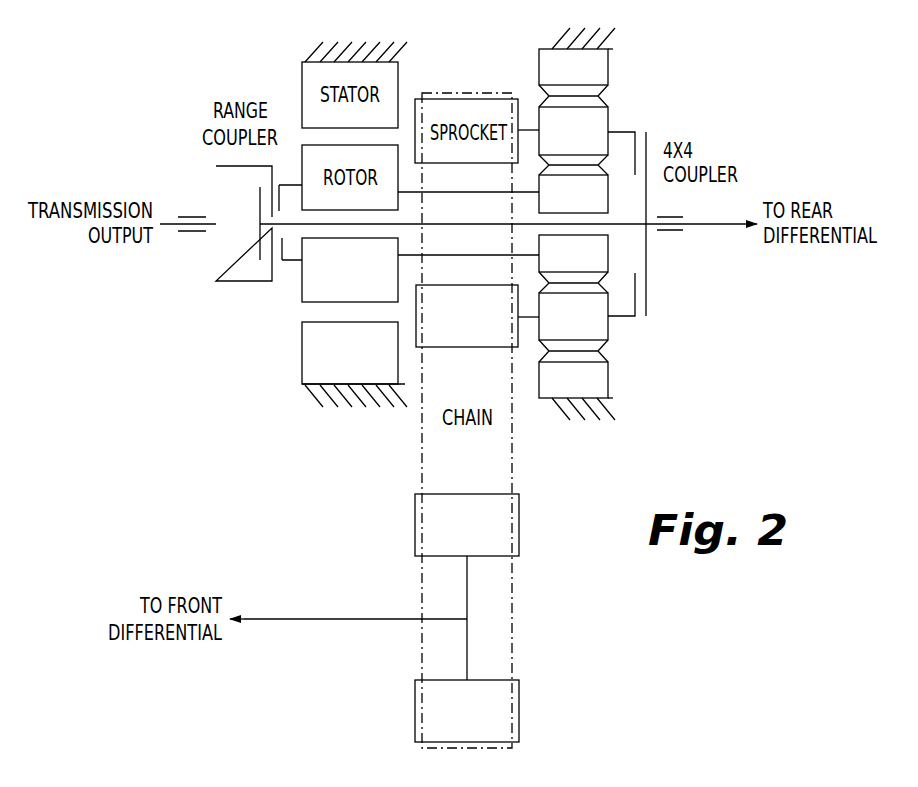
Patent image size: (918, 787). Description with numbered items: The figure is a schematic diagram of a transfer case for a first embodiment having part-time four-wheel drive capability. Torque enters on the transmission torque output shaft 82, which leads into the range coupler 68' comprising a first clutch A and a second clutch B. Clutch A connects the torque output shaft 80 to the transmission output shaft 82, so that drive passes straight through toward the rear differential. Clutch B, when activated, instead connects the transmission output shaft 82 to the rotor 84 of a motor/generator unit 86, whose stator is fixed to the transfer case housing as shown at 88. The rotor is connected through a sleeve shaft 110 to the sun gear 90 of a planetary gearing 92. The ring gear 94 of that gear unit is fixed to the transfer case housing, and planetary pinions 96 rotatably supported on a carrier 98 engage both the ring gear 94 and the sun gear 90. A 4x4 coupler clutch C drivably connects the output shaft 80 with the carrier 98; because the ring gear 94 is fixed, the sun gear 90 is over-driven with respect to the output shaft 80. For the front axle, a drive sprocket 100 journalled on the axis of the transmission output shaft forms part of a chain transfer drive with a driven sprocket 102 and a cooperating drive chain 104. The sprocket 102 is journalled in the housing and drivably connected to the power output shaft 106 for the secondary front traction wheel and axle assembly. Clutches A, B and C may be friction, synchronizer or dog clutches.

The range coupler 68' is at (237, 259).
The torque output shaft 80 is at (484, 224).
The transmission torque output shaft 82 is at (172, 233).
The rotor 84 is at (328, 292).
The motor/generator unit 86 is at (300, 80).
The stator fixed to transfer case housing 88 is at (398, 72).
The sun gear 90 is at (606, 186).
The planetary gearing 92 is at (608, 382).
The ring gear 94 is at (608, 73).
The planetary pinions 96 is at (606, 329).
The carrier 98 is at (532, 128).
The drive sprocket 100 is at (445, 107).
The driven sprocket 102 is at (415, 516).
The drive chain 104 is at (516, 479).
The power output shaft 106 is at (325, 617).
The sleeve shaft 110 is at (484, 192).
The first clutch A is at (265, 264).
The second clutch B is at (278, 264).
The 4x4 coupler clutch C is at (643, 318).